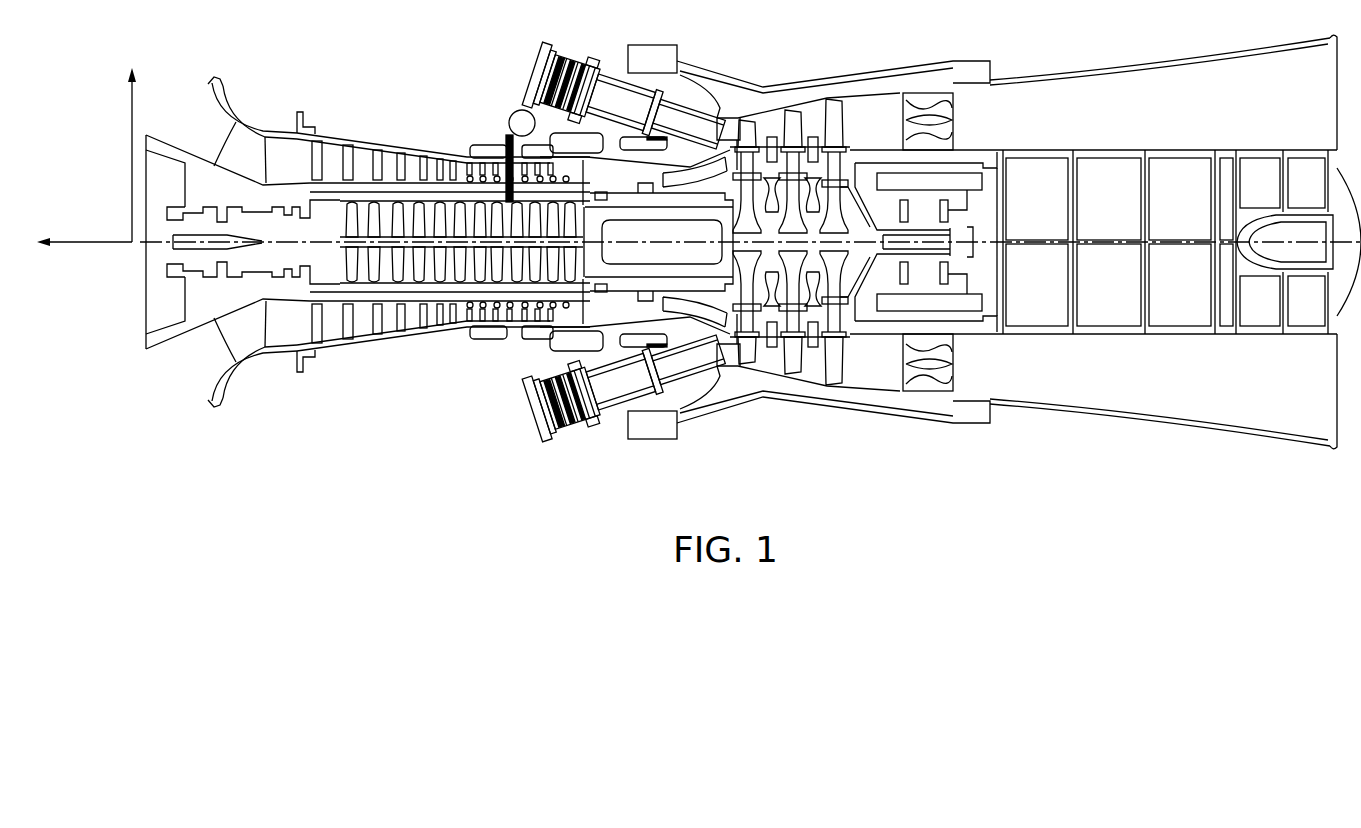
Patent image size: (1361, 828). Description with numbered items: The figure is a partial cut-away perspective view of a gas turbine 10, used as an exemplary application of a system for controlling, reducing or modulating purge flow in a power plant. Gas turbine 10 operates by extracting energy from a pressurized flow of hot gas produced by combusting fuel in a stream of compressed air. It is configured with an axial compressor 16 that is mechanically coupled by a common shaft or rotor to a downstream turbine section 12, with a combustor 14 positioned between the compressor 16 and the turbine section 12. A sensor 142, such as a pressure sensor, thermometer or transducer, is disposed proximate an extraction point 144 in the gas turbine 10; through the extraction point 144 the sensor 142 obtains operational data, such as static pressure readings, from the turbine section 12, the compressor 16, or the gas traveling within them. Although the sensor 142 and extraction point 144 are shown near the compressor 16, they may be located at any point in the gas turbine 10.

The gas turbine 10 is at (985, 497).
The turbine section 12 is at (800, 420).
The combustor 14 is at (603, 398).
The axial compressor 16 is at (388, 392).
The sensor 142 is at (526, 110).
The extraction point 144 is at (466, 153).